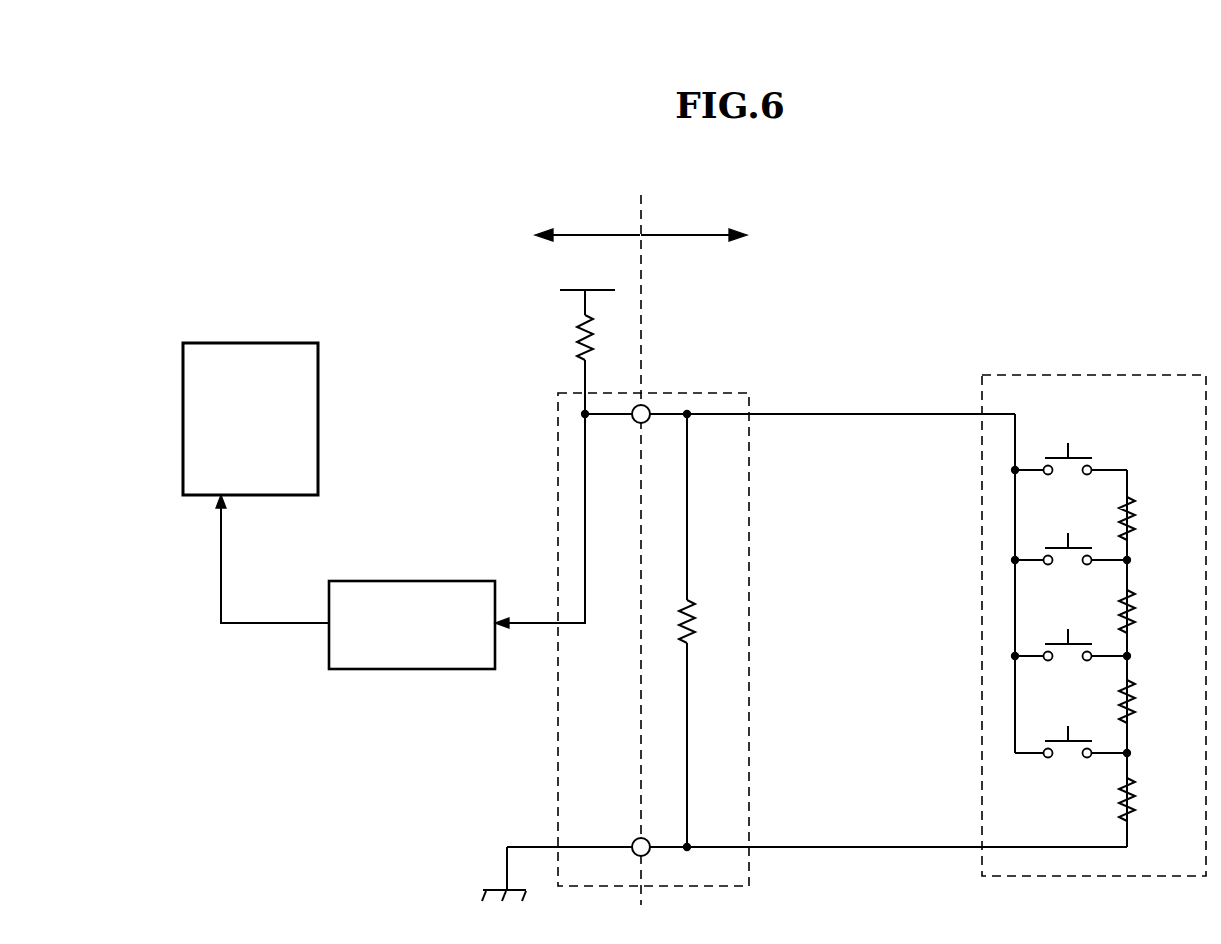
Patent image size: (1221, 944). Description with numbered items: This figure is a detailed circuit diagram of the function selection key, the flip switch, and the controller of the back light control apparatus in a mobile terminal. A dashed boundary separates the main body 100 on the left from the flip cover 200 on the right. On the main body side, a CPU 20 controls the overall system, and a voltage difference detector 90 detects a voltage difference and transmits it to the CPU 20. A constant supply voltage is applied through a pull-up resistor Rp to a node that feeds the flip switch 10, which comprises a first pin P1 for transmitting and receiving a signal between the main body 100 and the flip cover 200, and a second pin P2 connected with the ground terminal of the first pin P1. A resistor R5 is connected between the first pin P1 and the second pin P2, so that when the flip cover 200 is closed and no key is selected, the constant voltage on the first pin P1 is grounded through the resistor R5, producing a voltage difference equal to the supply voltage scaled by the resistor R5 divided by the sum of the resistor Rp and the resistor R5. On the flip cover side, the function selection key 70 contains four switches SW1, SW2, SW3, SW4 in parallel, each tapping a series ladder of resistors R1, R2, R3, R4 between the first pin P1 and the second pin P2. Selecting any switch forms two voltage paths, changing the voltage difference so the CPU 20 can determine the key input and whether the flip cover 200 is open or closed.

The flip switch 10 is at (721, 393).
The CPU 20 is at (219, 343).
The function selection key 70 is at (1103, 385).
The voltage difference detector 90 is at (423, 583).
The main body 100 is at (477, 280).
The flip cover 200 is at (804, 280).
The first pin P1 is at (648, 405).
The second pin P2 is at (634, 840).
The resistor Rp is at (576, 337).
The resistor R1 is at (1147, 518).
The resistor R2 is at (1147, 611).
The resistor R3 is at (1147, 701).
The resistor R4 is at (1147, 799).
The resistor R5 is at (705, 630).
The switch SW1 is at (1070, 455).
The switch SW2 is at (1071, 545).
The switch SW3 is at (1071, 641).
The switch SW4 is at (1073, 737).